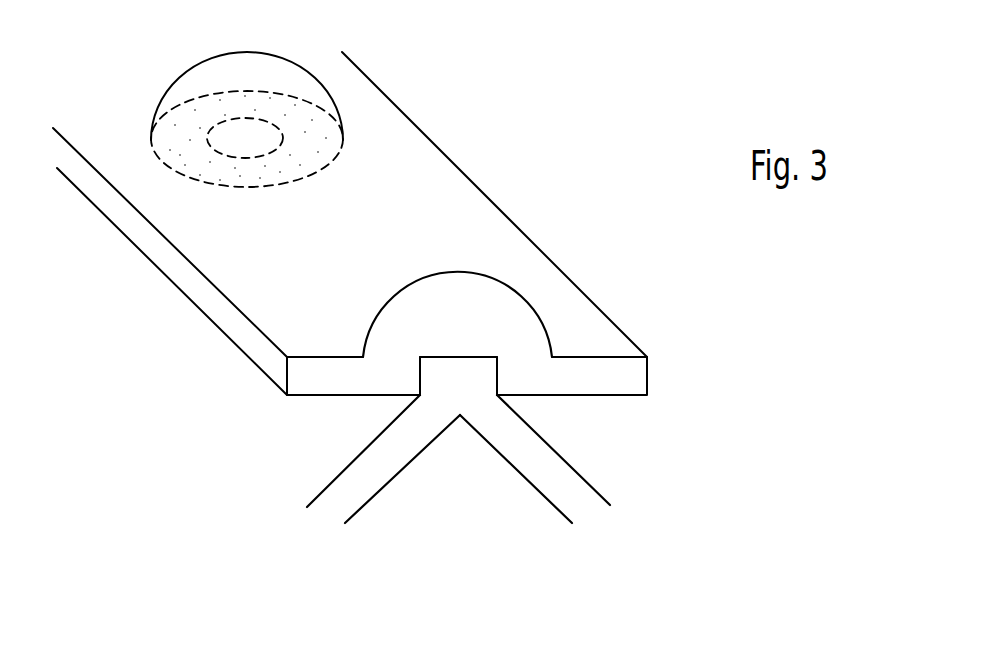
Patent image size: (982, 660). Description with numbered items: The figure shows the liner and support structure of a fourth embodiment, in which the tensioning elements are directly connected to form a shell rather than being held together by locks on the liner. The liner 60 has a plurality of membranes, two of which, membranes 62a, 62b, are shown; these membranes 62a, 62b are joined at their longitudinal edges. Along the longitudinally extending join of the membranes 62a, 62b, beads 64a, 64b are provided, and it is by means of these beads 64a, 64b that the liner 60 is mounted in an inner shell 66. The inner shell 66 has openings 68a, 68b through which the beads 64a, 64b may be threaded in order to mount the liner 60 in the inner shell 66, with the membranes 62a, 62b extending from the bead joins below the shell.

The liner 60 is at (397, 309).
The membrane 62a is at (523, 465).
The membrane 62b is at (358, 493).
The bead 64a is at (417, 291).
The bead 64b is at (257, 75).
The inner shell 66 is at (225, 272).
The opening 68a is at (418, 372).
The opening 68b is at (262, 145).